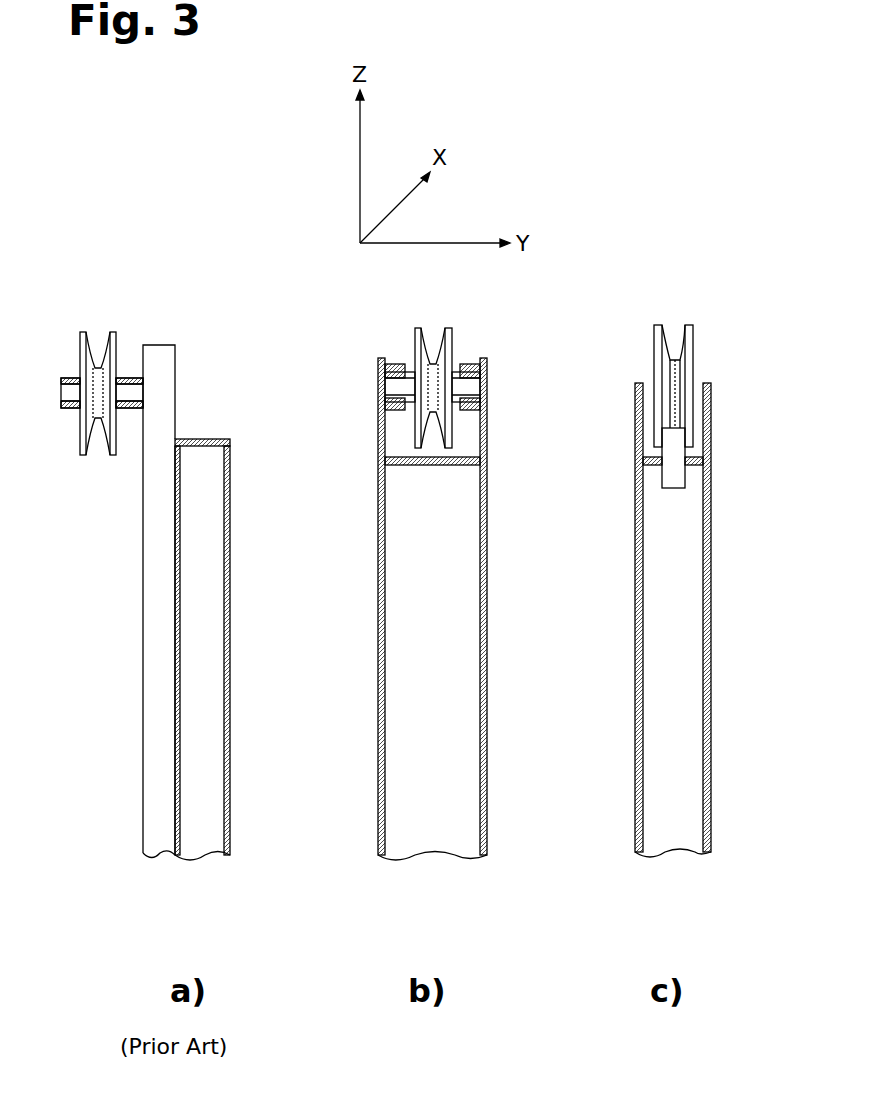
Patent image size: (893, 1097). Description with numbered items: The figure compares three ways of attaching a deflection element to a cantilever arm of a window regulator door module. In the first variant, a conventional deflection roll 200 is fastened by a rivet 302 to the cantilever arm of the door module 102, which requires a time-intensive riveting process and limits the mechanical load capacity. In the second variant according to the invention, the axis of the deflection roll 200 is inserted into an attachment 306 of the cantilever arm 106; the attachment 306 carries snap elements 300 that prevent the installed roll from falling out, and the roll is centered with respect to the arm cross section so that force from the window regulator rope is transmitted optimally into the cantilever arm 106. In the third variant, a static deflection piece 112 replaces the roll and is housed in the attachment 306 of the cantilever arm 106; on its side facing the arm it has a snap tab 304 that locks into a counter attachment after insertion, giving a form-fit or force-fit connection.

The door module 102 is at (230, 565).
The cantilever arm 106 is at (146, 650).
The static deflection piece 112 is at (680, 360).
The deflection roll 200 is at (85, 358).
The snap elements 300 is at (398, 368).
The rivet 302 is at (178, 385).
The snap tab 304 is at (666, 480).
The attachment 306 is at (470, 440).